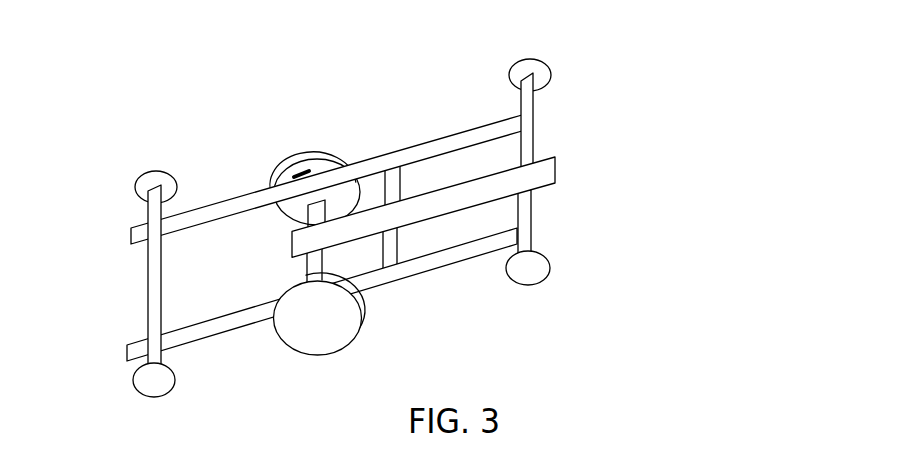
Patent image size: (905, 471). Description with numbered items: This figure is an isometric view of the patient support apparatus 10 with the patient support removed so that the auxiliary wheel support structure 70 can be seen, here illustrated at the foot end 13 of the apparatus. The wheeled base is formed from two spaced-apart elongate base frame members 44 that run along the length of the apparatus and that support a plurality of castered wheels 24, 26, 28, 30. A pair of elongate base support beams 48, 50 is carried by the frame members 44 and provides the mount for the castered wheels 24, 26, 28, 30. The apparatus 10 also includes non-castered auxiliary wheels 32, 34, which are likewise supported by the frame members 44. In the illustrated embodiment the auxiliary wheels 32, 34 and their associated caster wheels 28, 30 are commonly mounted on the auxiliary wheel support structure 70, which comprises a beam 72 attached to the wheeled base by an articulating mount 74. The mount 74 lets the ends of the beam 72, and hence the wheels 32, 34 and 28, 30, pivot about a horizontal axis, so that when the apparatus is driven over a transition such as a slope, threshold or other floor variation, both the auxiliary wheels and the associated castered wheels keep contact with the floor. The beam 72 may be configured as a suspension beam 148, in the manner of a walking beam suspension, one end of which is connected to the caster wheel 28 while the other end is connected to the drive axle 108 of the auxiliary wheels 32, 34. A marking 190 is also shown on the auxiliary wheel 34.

The patient support apparatus 10 is at (605, 147).
The foot end 13 is at (527, 130).
The castered wheel 24 is at (142, 385).
The castered wheel 26 is at (148, 181).
The castered wheel 28 is at (540, 275).
The castered wheel 30 is at (539, 72).
The non-castered auxiliary wheel 32 is at (343, 338).
The non-castered auxiliary wheel 34 is at (290, 160).
The elongate base frame member 44 is at (223, 323).
The elongate base support beam 48 is at (533, 227).
The elongate base support beam 50 is at (151, 296).
The auxiliary wheel support structure 70 is at (434, 174).
The beam 72 is at (522, 182).
The articulating mount 74 is at (391, 171).
The drive axle 108 is at (272, 183).
The suspension beam 148 is at (429, 228).
The marker 190 is at (303, 166).